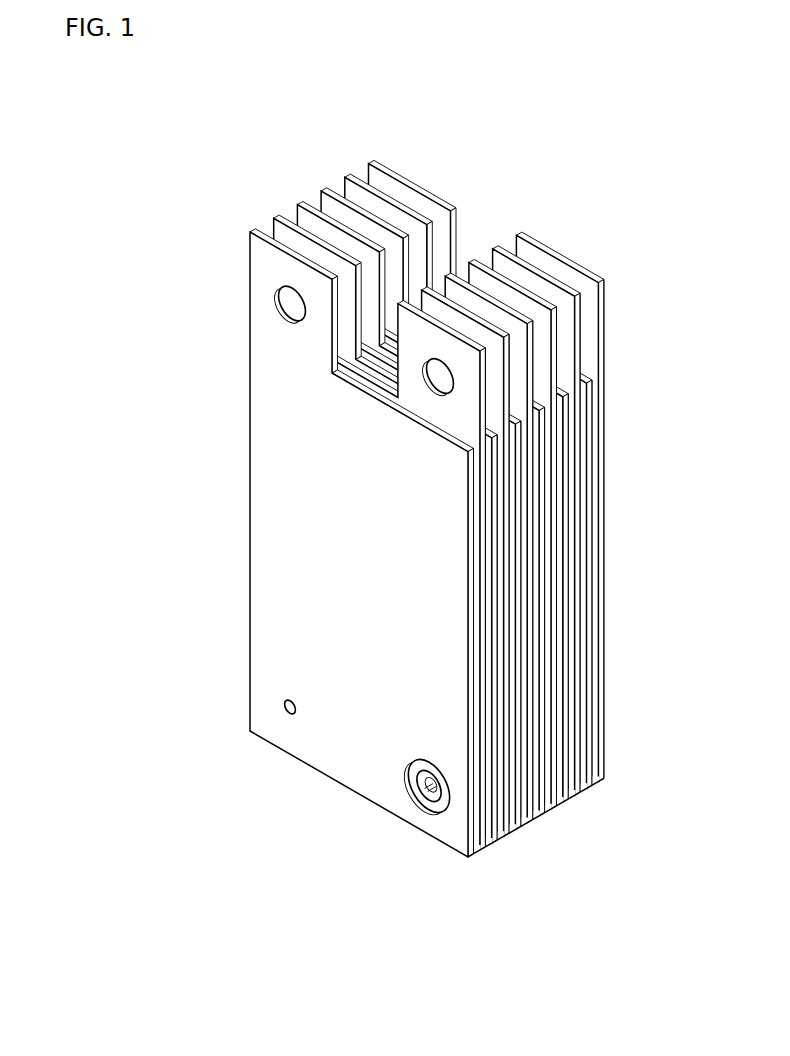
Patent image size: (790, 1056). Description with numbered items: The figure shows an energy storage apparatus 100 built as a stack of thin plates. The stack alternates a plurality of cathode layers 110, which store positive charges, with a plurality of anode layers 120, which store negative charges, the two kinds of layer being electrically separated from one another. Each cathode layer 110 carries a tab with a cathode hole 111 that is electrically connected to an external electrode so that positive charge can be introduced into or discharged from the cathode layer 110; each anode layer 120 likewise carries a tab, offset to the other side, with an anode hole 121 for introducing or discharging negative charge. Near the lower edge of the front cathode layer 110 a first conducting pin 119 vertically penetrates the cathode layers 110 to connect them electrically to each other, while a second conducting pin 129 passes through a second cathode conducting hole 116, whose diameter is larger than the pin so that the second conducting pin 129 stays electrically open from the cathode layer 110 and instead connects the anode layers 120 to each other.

The energy storage apparatus 100 is at (111, 123).
The cathode layer 110 is at (255, 258).
The cathode hole 111 is at (277, 302).
The anode layer 120 is at (467, 420).
The anode hole 121 is at (427, 379).
The first conducting pin 119 is at (283, 708).
The second conducting pin 129 is at (428, 786).
The second cathode conducting hole 116 is at (446, 812).